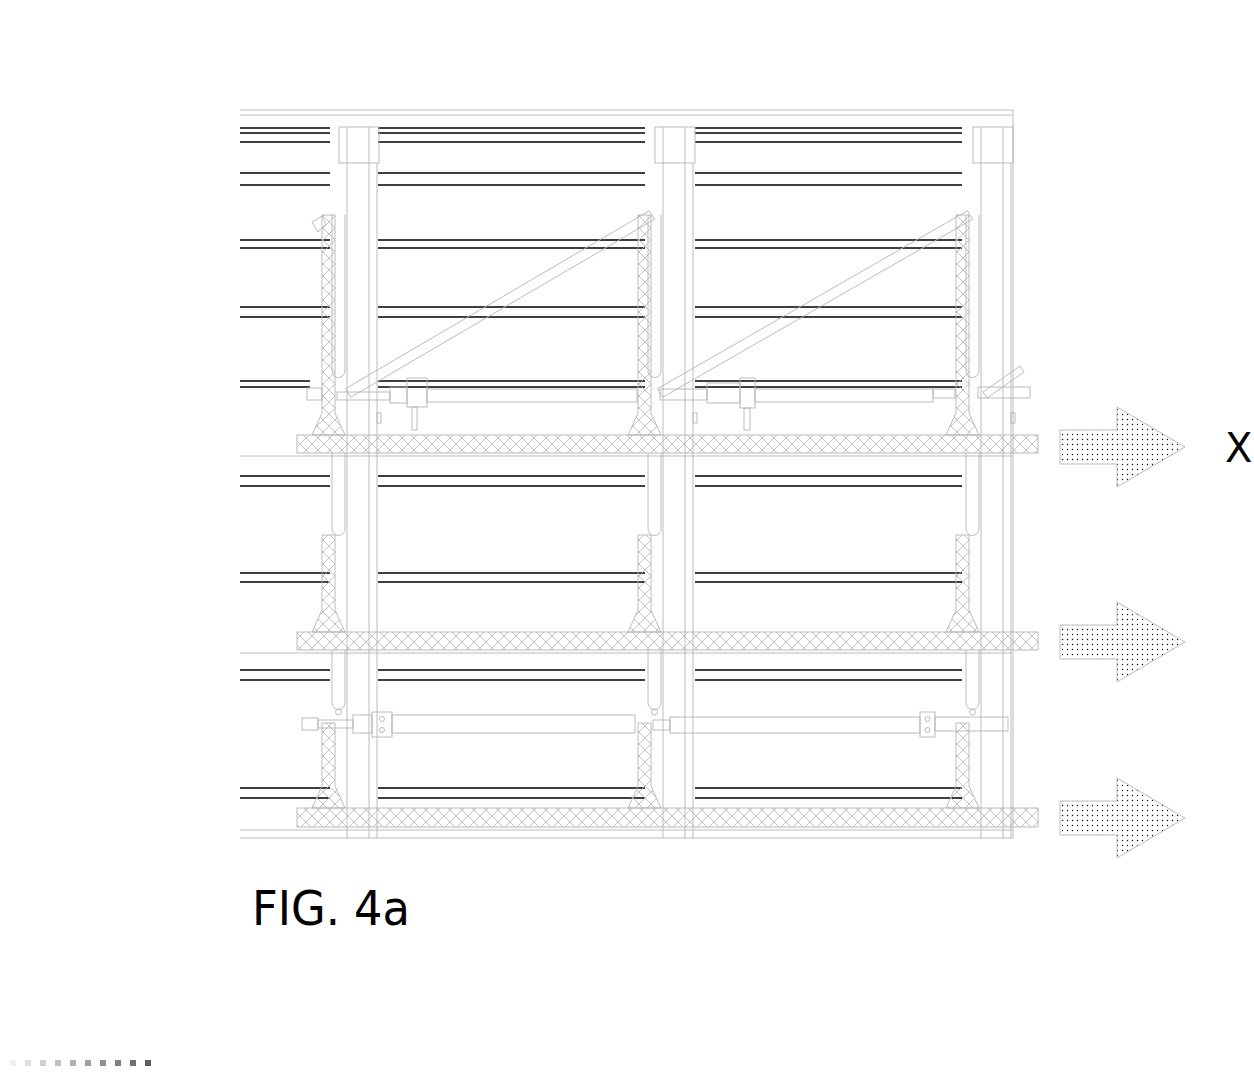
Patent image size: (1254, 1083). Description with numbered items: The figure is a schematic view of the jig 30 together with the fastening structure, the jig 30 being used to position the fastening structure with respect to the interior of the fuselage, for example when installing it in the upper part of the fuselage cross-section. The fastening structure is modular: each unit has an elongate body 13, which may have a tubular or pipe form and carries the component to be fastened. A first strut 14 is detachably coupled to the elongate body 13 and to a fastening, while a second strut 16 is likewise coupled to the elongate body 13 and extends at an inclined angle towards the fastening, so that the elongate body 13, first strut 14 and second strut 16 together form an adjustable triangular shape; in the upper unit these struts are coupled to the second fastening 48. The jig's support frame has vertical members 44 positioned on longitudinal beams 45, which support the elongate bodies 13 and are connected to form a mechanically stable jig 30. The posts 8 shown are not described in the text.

The support post 8 is at (358, 140).
The elongate body 13 is at (822, 395).
The first strut 14 is at (970, 300).
The second strut 16 is at (748, 348).
The jig 30 is at (270, 450).
The vertical member 44 is at (642, 777).
The longitudinal beam 45 is at (817, 815).
The second fastening 48 is at (978, 218).